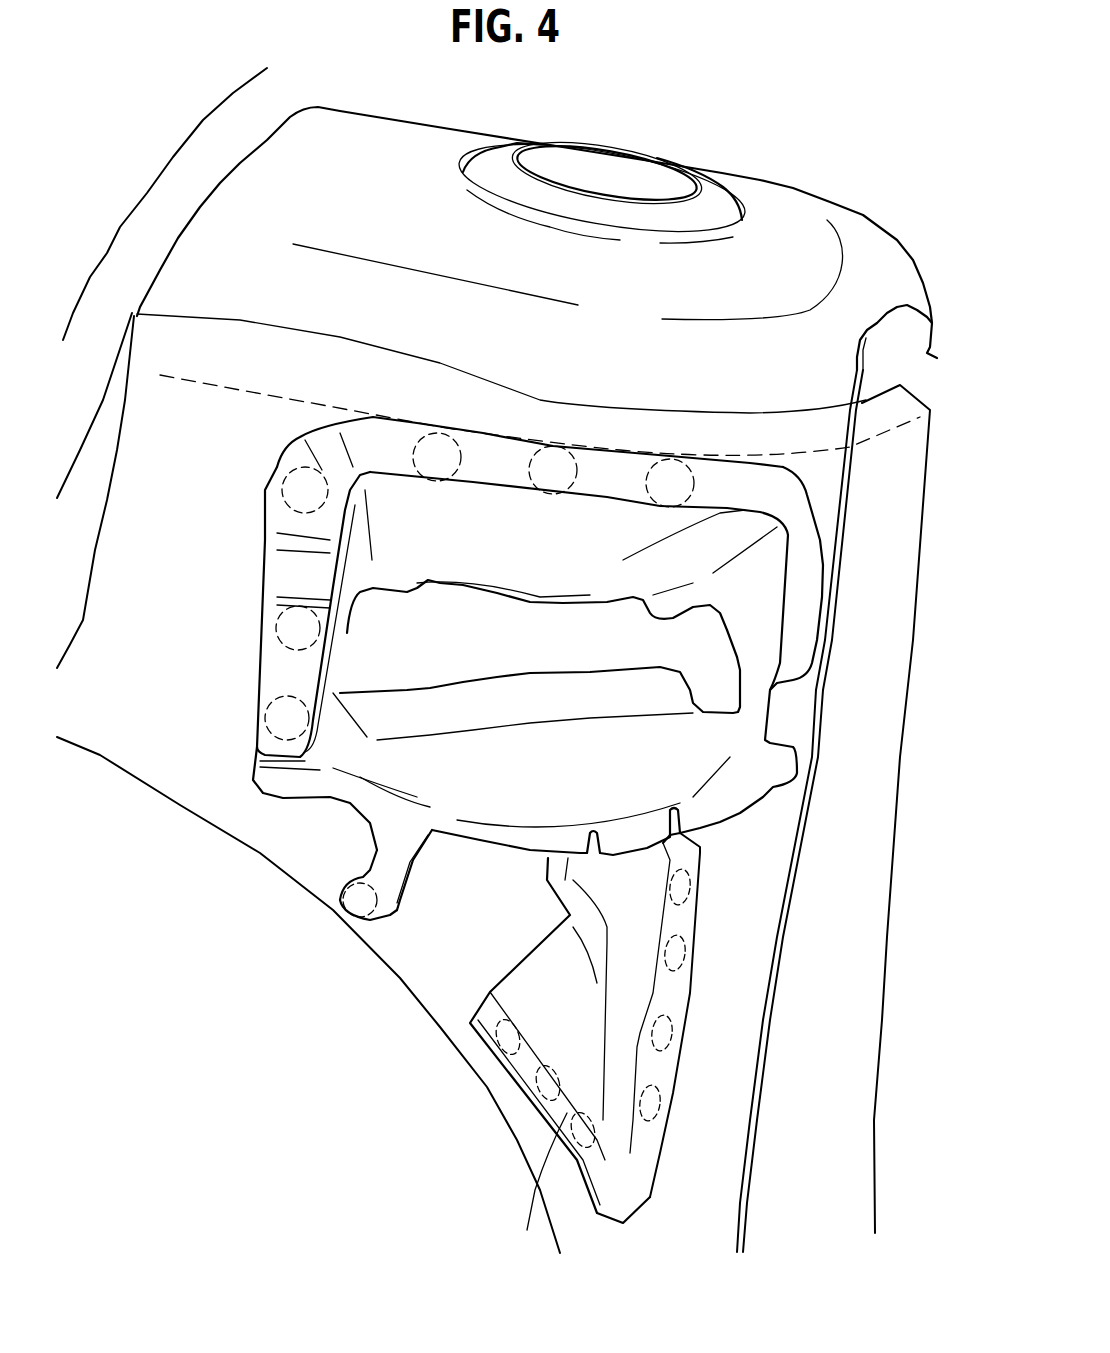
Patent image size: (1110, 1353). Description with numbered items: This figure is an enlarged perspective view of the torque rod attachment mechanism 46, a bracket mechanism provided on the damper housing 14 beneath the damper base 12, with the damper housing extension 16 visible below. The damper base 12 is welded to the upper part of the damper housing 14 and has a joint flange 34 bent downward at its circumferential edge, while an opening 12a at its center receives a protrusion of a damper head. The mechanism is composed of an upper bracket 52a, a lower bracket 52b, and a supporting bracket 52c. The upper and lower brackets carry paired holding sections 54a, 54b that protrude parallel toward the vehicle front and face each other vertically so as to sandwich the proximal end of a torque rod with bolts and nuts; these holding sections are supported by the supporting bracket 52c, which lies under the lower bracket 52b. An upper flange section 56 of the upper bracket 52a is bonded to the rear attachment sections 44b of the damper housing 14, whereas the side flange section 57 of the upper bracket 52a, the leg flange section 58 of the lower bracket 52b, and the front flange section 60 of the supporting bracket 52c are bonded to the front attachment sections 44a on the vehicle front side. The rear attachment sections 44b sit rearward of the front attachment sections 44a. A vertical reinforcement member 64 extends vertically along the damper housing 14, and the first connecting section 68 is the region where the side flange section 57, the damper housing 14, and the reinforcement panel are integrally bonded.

The damper base 12 is at (884, 206).
The opening 12a is at (590, 163).
The damper housing 14 is at (155, 818).
The damper housing extension 16 is at (523, 1252).
The joint flange 34 is at (880, 440).
The front attachment sections 44a is at (263, 707).
The rear attachment sections 44b is at (555, 447).
The torque rod attachment mechanism 46 is at (281, 437).
The upper bracket 52a is at (838, 605).
The lower bracket 52b is at (827, 758).
The supporting bracket 52c is at (702, 998).
The holding section 54a is at (723, 497).
The holding section 54b is at (523, 777).
The upper flange section 56 is at (620, 450).
The side flange section 57 is at (263, 667).
The leg flange section 58 is at (333, 907).
The front flange section 60 is at (527, 1230).
The vertical reinforcement member 64 is at (905, 882).
The first connecting section 68 is at (263, 483).